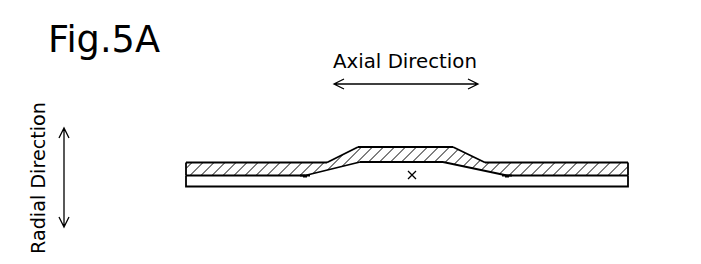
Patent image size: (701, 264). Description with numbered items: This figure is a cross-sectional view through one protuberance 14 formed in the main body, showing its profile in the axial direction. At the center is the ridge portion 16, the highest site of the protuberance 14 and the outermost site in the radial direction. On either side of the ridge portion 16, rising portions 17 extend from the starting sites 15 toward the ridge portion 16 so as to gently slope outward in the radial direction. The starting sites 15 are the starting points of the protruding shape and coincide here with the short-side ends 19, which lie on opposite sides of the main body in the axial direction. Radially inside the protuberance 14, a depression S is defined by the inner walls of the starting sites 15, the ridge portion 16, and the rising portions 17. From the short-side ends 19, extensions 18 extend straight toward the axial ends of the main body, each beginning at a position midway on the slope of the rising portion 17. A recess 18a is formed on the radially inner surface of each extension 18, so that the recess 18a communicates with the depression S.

The protuberance 14 is at (589, 101).
The extension 18 is at (260, 162).
The recess 18a is at (233, 186).
The rising portion 17 is at (342, 155).
The ridge portion 16 is at (407, 146).
The short-side end 19 is at (305, 188).
The starting site 15 is at (436, 210).
The depression S is at (413, 179).